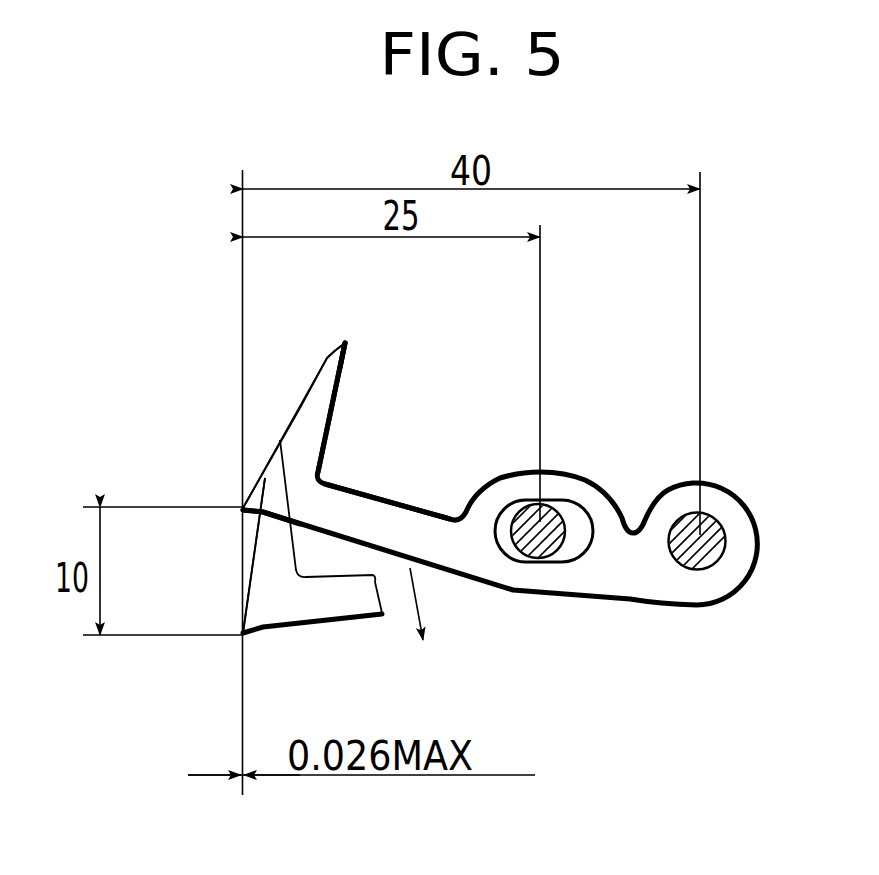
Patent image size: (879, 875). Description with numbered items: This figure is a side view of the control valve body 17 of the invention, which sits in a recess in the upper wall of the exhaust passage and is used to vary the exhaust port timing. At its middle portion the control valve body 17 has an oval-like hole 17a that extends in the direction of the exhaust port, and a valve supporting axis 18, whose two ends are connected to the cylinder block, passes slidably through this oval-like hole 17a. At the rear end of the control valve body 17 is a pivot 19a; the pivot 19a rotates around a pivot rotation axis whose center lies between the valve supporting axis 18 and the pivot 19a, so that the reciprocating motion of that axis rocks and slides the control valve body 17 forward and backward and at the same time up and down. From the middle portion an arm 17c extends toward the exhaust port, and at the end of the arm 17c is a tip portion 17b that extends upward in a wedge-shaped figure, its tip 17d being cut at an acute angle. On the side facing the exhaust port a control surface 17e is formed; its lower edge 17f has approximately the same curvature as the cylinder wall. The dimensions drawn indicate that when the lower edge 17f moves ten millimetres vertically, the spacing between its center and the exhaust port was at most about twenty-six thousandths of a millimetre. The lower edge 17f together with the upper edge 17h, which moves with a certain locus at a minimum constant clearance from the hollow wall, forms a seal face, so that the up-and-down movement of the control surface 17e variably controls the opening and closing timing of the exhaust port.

The control valve body 17 is at (587, 472).
The oval-like hole 17a is at (562, 563).
The tip portion 17b is at (320, 407).
The arm 17c is at (403, 505).
The tip 17d is at (327, 357).
The control surface 17e is at (293, 410).
The lower edge 17f is at (240, 510).
The upper edge 17h is at (323, 363).
The valve supporting axis 18 is at (530, 502).
The pivot 19a is at (707, 515).